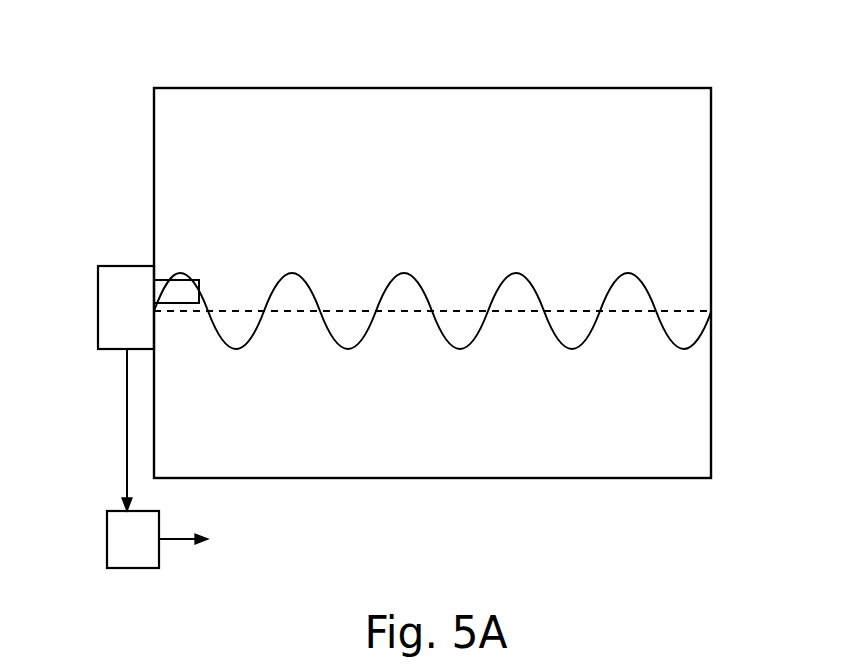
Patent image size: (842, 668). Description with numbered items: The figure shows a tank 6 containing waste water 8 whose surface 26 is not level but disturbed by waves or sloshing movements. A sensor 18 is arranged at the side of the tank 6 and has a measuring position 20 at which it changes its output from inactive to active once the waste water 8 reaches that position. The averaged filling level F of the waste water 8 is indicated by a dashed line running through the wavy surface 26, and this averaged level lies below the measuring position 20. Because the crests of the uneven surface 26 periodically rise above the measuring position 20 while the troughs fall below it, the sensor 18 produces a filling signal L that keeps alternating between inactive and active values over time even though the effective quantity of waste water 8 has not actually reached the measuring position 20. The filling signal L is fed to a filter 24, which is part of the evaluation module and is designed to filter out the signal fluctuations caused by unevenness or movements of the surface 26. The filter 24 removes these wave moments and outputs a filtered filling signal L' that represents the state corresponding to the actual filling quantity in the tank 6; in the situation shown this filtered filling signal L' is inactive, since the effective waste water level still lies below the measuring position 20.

The tank 6 is at (226, 88).
The waste water 8 is at (414, 404).
The sensor 18 is at (129, 265).
The measuring position 20 is at (154, 291).
The filter 24 is at (119, 552).
The surface 26 is at (537, 293).
The filling level F is at (336, 310).
The filling signal L is at (113, 430).
The filtered filling signal L' is at (202, 539).